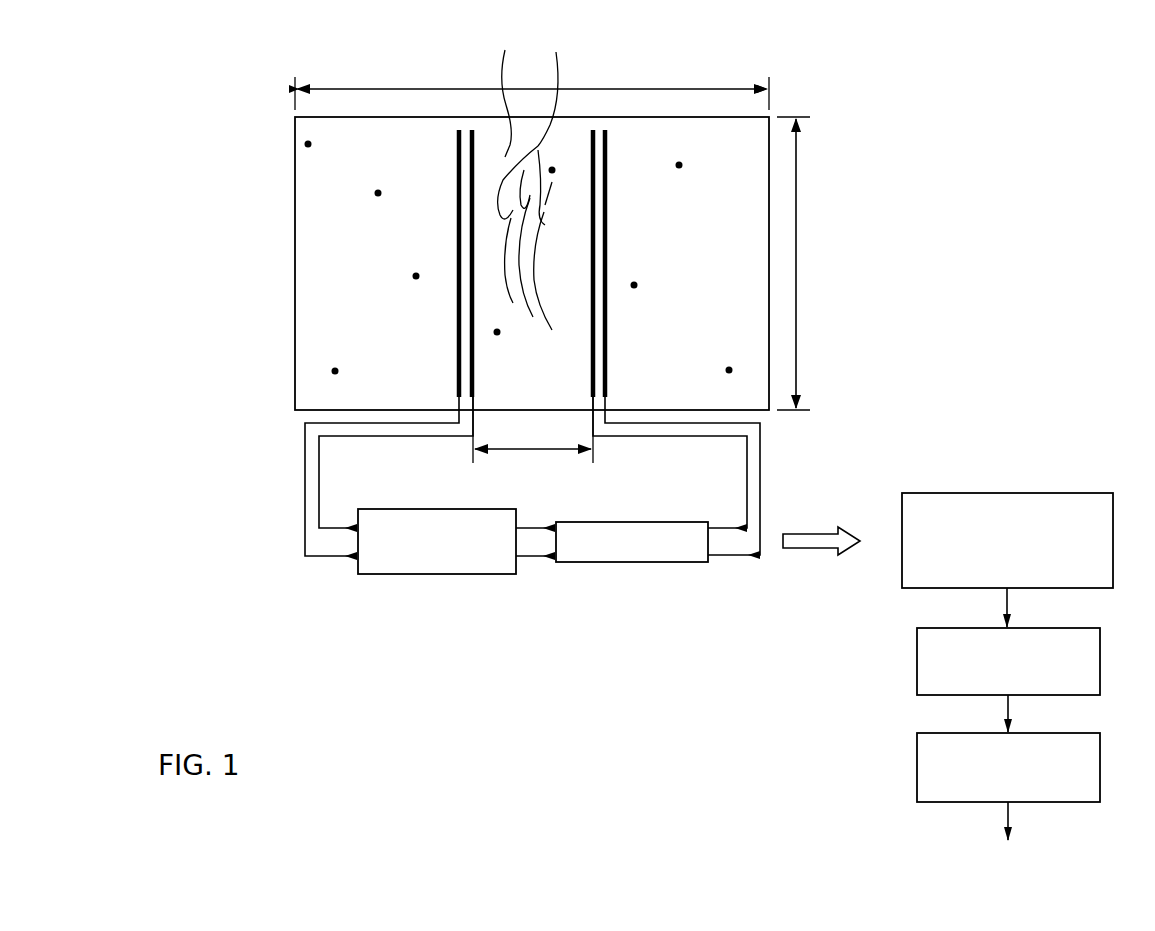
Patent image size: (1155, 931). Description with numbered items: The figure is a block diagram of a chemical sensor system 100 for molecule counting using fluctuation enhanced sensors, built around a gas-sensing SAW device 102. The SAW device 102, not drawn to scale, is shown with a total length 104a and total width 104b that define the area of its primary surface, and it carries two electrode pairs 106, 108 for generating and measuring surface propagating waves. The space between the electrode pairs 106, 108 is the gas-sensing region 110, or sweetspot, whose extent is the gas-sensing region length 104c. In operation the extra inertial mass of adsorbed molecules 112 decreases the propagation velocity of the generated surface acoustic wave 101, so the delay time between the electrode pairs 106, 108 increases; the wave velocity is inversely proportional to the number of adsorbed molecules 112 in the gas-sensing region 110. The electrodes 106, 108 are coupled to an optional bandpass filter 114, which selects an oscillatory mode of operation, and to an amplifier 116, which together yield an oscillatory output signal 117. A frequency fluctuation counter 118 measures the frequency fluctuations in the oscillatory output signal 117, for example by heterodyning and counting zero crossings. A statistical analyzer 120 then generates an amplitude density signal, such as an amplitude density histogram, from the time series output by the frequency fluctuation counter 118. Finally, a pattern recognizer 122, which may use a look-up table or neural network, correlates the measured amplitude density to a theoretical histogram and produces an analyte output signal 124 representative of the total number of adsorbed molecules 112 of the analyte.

The chemical sensor system 100 is at (235, 101).
The surface acoustic wave 101 is at (538, 178).
The gas-sensing SAW device 102 is at (295, 372).
The total length 104a is at (612, 89).
The total width 104b is at (797, 289).
The gas-sensing region length 104c is at (537, 452).
The electrode pair 106 is at (459, 145).
The electrode pair 108 is at (606, 145).
The gas-sensing region 110 is at (509, 91).
The adsorbed molecules 112 is at (305, 144).
The bandpass filter 114 is at (440, 575).
The amplifier 116 is at (636, 563).
The oscillatory output signal 117 is at (810, 549).
The frequency fluctuation counter 118 is at (953, 493).
The statistical analyzer 120 is at (917, 665).
The pattern recognizer 122 is at (917, 769).
The analyte output signal 124 is at (1008, 813).